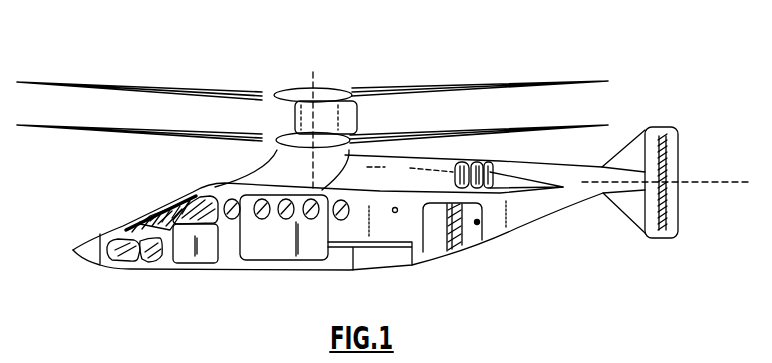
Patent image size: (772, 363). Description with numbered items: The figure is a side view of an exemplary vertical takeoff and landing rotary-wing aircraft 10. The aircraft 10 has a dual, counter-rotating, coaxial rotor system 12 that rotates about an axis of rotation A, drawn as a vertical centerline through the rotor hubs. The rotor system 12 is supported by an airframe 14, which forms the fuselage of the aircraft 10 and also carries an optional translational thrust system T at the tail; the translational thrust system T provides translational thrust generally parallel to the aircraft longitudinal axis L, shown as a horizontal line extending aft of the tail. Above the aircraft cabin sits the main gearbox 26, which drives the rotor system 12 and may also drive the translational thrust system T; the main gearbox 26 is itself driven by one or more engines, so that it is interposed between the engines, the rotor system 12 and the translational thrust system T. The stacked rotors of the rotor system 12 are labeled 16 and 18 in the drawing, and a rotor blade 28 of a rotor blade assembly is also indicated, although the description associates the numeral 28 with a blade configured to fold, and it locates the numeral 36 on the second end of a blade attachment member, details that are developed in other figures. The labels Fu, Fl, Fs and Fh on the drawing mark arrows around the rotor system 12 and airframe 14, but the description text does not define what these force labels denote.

The rotary-wing aircraft 10 is at (383, 159).
The coaxial rotor system 12 is at (312, 117).
The airframe 14 is at (391, 190).
The upper rotor assembly 16 is at (358, 85).
The lower rotor assembly 18 is at (275, 151).
The main gearbox 26 is at (303, 174).
The rotor blade 28 is at (280, 261).
The second end of attachment member 36 is at (263, 105).
The axis of rotation A is at (315, 73).
The translational thrust system T is at (665, 118).
The aircraft longitudinal axis L is at (707, 182).
The upper rotor force Fu is at (288, 85).
The lower rotor force Fl is at (283, 129).
The side force Fs is at (357, 114).
The horizontal force Fh is at (453, 117).